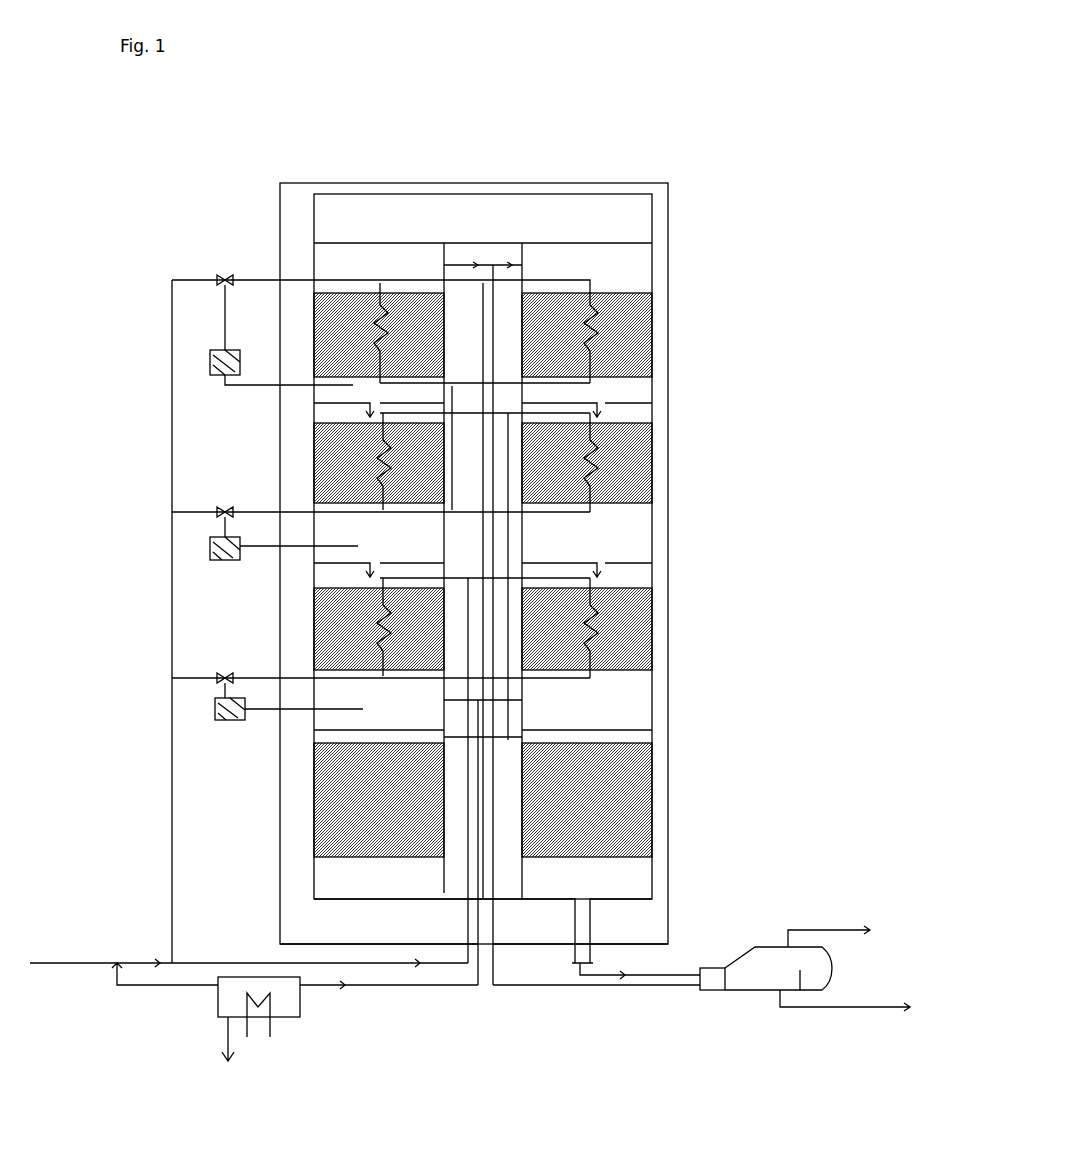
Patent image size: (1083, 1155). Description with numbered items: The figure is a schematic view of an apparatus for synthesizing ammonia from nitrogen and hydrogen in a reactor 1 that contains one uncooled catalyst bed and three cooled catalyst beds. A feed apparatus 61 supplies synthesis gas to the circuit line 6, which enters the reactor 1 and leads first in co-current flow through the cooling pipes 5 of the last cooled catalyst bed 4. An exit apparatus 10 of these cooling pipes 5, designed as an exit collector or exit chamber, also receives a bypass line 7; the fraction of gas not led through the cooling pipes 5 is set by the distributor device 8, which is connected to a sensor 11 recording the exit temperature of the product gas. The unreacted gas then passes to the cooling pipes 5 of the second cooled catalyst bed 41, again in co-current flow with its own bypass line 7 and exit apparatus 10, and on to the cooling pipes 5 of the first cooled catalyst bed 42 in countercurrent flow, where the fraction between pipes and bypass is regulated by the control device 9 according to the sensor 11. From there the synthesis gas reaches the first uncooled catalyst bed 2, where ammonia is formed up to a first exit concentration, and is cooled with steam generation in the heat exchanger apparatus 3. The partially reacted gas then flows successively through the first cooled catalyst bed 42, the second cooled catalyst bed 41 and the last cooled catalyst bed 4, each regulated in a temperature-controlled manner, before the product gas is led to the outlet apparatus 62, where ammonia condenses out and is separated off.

The reactor 1 is at (670, 254).
The first uncooled catalyst bed 2 is at (628, 788).
The heat exchanger apparatus 3 is at (768, 958).
The last cooled catalyst bed 4 is at (628, 626).
The cooling pipes 5 is at (383, 620).
The circuit line 6 is at (212, 963).
The bypass line 7 is at (172, 617).
The distributor device 8 is at (225, 275).
The control device 9 is at (215, 375).
The exit apparatus 10 is at (378, 283).
The sensor 11 is at (345, 709).
The second cooled catalyst bed 41 is at (630, 460).
The first cooled catalyst bed 42 is at (633, 333).
The feed apparatus 61 is at (82, 963).
The outlet apparatus 62 is at (225, 1033).